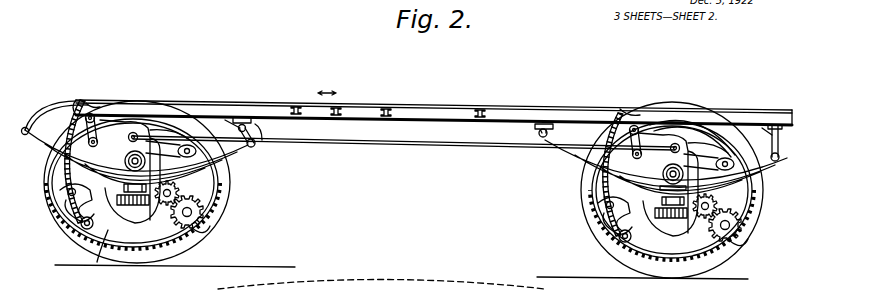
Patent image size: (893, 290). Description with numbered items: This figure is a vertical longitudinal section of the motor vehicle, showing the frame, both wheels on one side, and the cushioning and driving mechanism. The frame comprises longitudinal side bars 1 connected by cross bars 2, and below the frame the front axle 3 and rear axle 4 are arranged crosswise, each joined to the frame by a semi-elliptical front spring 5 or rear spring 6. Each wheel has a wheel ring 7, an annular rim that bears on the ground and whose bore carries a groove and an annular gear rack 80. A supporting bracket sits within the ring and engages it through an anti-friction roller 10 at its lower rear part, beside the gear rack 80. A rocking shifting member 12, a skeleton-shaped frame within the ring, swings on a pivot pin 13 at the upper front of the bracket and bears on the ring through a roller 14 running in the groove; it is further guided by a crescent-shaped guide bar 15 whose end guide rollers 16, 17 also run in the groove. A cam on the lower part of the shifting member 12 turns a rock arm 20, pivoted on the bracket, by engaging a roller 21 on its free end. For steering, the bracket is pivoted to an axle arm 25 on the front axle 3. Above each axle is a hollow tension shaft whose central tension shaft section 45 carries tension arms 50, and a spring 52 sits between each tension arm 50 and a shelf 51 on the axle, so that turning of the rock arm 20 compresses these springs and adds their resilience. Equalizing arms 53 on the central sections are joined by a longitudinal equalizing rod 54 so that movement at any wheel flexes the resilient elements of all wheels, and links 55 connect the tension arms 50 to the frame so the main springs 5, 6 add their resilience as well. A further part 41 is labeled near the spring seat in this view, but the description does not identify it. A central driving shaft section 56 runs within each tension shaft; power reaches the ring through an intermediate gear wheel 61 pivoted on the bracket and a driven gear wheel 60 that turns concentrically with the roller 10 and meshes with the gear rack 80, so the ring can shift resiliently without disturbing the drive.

The longitudinal side bar 1 is at (427, 110).
The cross bar 2 is at (92, 102).
The front axle 3 is at (118, 212).
The rear axle 4 is at (672, 232).
The front spring 5 is at (251, 150).
The rear spring 6 is at (580, 166).
The wheel ring 7 is at (203, 224).
The anti-friction roller 10 is at (210, 195).
The rocking shifting member 12 is at (628, 236).
The pivot pin 13 is at (100, 140).
The roller 14 is at (80, 222).
The crescent-shaped guide bar 15 is at (75, 150).
The guide roller 16 is at (85, 231).
The guide roller 17 is at (97, 262).
The rock arm 20 is at (234, 120).
The roller 21 is at (258, 124).
The axle arm 25 is at (184, 146).
The spring seat 41 is at (136, 208).
The central tension shaft section 45 is at (70, 172).
The tension arm 50 is at (137, 149).
The shelf 51 is at (76, 205).
The spring 52 is at (68, 192).
The equalizing arm 53 is at (156, 140).
The equalizing rod 54 is at (432, 142).
The link 55 is at (60, 104).
The central driving shaft section 56 is at (165, 216).
The driven gear wheel 60 is at (205, 212).
The intermediate gear wheel 61 is at (198, 178).
The gear rack 80 is at (184, 240).